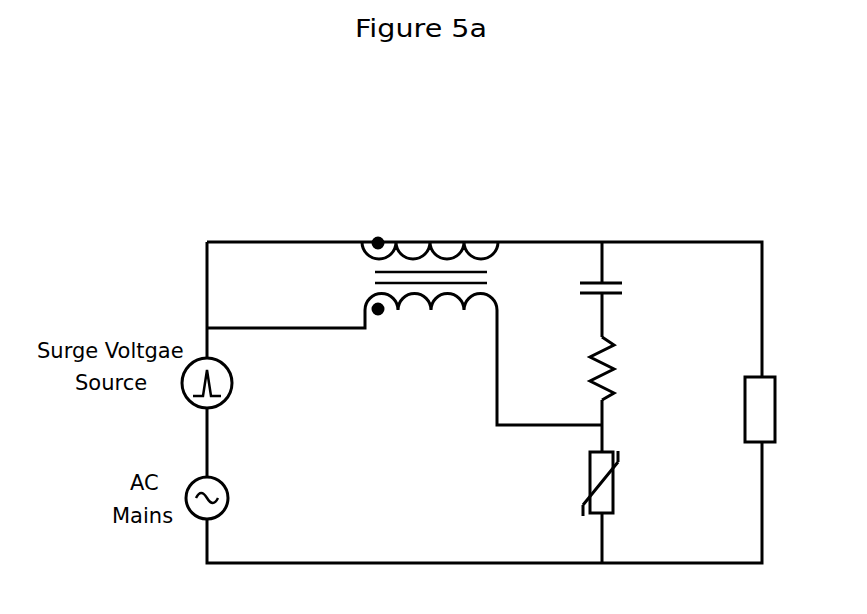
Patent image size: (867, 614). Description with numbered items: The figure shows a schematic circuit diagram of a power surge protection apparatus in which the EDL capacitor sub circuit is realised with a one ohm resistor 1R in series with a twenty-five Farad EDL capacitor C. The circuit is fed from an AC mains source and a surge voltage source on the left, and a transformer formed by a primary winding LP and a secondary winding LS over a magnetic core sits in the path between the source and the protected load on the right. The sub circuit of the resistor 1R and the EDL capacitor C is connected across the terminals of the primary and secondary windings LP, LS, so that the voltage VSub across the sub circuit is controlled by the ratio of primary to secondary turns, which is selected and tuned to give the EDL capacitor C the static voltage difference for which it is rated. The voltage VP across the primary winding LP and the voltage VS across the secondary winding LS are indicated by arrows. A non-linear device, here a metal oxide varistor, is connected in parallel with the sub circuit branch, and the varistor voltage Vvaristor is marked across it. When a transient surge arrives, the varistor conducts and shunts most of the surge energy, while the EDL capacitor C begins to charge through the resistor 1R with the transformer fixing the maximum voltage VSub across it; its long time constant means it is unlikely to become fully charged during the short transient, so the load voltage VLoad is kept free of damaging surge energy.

The secondary winding LS is at (430, 238).
The primary winding LP is at (483, 359).
The EDL capacitor C is at (629, 289).
The resistor 1R is at (622, 368).
The varistor voltage Vvaristor is at (563, 437).
The secondary winding voltage VS is at (424, 180).
The primary winding voltage VP is at (426, 371).
The sub circuit voltage VSub is at (705, 310).
The load voltage VLoad is at (718, 436).